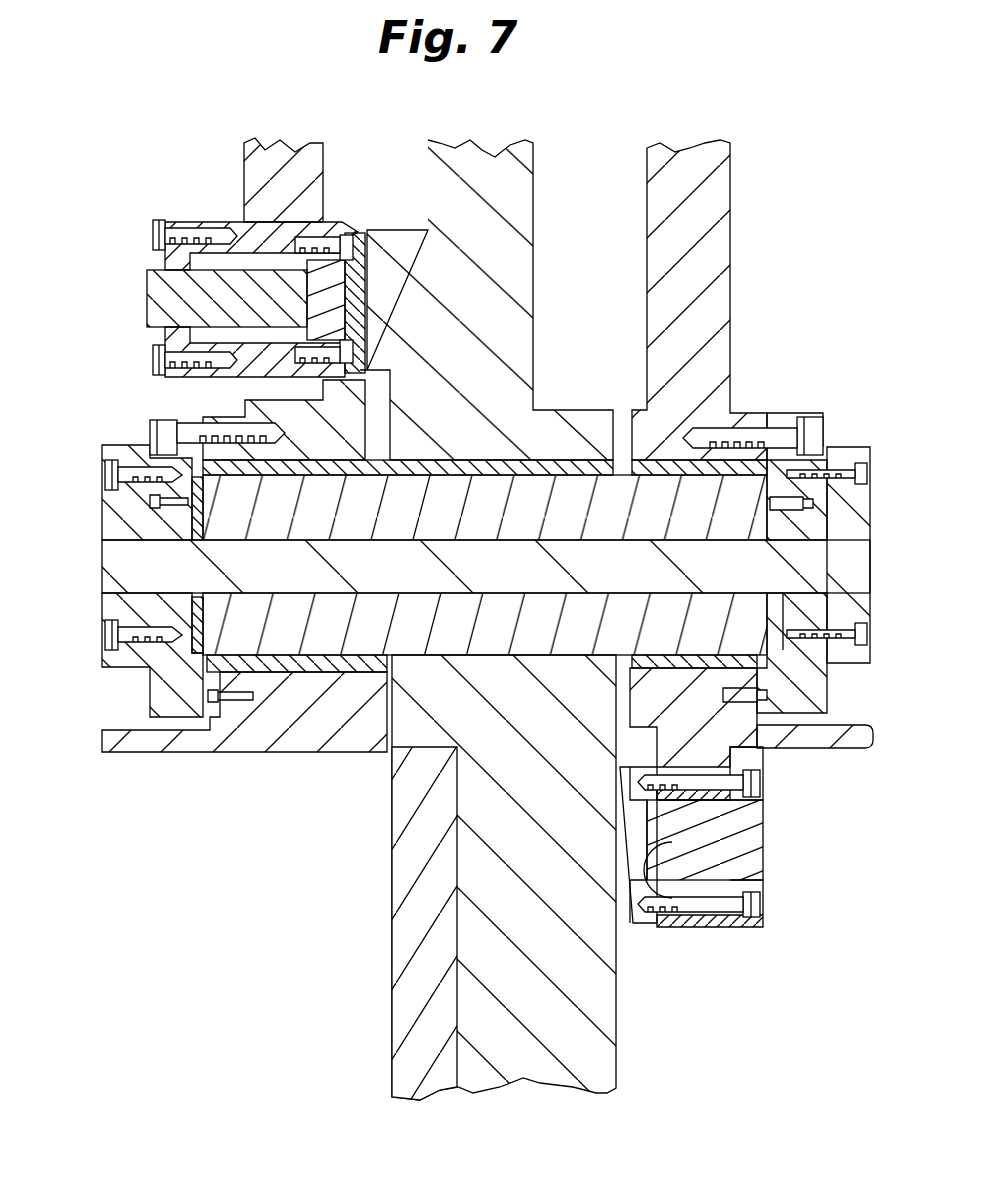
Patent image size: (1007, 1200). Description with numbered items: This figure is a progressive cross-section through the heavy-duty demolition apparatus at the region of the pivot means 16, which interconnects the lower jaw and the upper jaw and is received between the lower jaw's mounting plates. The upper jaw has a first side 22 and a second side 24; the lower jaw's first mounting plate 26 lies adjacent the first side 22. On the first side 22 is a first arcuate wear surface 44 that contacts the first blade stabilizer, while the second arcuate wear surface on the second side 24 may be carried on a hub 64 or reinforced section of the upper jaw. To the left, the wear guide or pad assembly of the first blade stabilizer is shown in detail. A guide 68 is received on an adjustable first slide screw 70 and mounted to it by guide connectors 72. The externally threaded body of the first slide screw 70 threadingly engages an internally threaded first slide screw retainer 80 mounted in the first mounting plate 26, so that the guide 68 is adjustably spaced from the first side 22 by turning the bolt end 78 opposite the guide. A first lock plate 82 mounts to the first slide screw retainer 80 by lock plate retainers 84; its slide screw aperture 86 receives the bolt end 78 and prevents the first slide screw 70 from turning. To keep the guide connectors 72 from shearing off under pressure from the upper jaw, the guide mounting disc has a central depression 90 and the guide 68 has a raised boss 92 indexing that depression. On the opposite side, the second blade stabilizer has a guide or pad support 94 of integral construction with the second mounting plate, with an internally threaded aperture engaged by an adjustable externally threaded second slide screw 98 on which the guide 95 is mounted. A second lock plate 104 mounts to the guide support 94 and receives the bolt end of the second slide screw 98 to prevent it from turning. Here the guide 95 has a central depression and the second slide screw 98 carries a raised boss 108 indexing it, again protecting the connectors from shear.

The pivot means 16 is at (102, 582).
The first side 22 is at (475, 153).
The second side 24 is at (390, 932).
The first mounting plate 26 is at (270, 143).
The first arcuate wear surface 44 is at (393, 228).
The hub 64 is at (614, 1010).
The guide 68 is at (350, 262).
The first slide screw 70 is at (147, 310).
The guide connectors 72 is at (763, 908).
The bolt end 78 is at (196, 313).
The first slide screw retainer 80 is at (247, 228).
The first lock plate 82 is at (172, 217).
The lock plate retainers 84 is at (152, 237).
The slide screw aperture 86 is at (290, 235).
The central depression 90 is at (240, 362).
The raised boss 92 is at (340, 233).
The guide support 94 is at (713, 735).
The guide 95 is at (632, 917).
The second slide screw 98 is at (757, 852).
The second lock plate 104 is at (763, 805).
The raised boss 108 is at (688, 913).